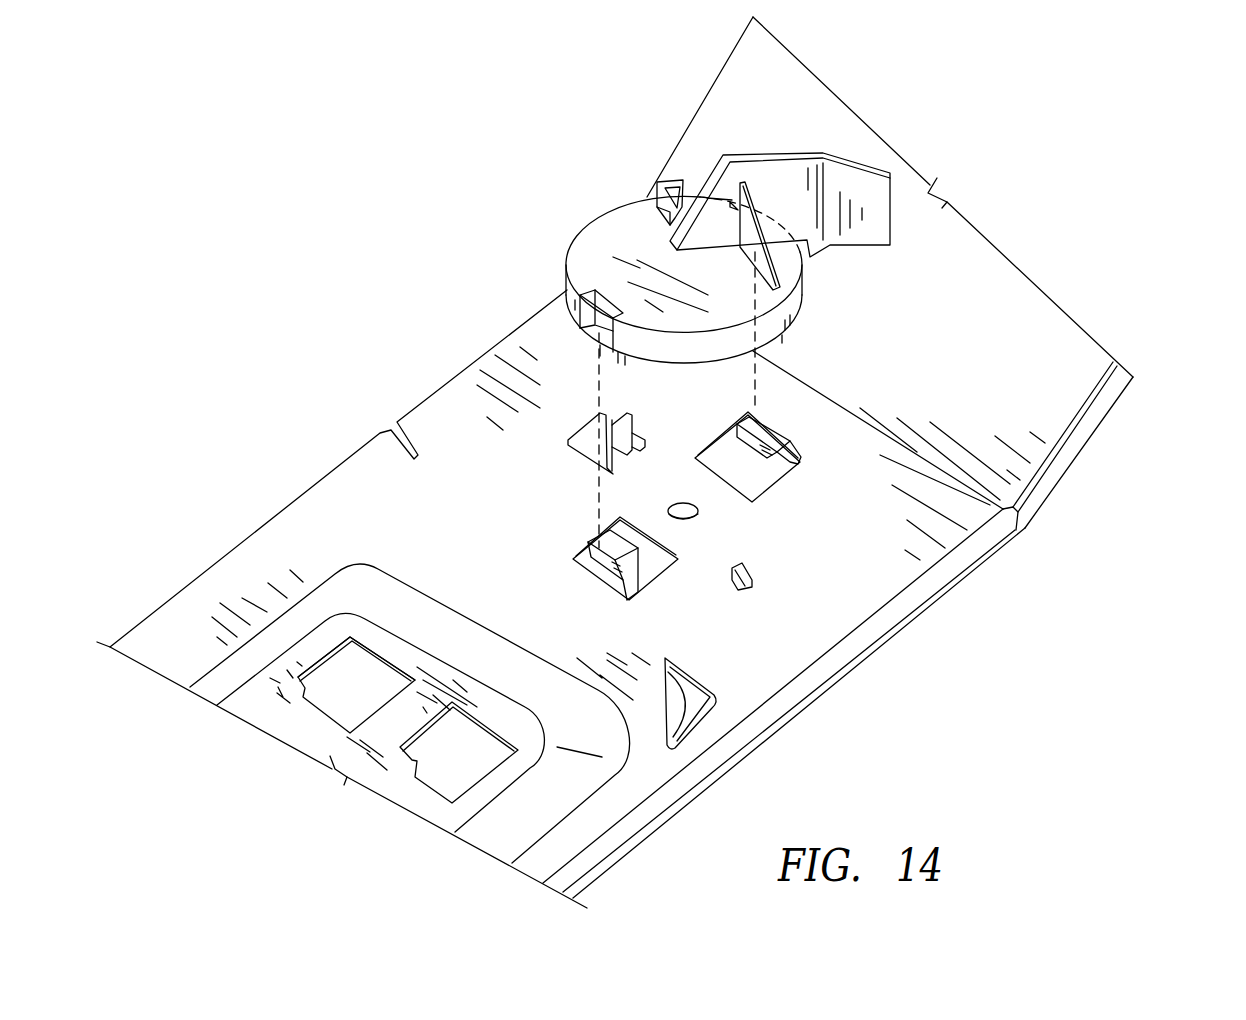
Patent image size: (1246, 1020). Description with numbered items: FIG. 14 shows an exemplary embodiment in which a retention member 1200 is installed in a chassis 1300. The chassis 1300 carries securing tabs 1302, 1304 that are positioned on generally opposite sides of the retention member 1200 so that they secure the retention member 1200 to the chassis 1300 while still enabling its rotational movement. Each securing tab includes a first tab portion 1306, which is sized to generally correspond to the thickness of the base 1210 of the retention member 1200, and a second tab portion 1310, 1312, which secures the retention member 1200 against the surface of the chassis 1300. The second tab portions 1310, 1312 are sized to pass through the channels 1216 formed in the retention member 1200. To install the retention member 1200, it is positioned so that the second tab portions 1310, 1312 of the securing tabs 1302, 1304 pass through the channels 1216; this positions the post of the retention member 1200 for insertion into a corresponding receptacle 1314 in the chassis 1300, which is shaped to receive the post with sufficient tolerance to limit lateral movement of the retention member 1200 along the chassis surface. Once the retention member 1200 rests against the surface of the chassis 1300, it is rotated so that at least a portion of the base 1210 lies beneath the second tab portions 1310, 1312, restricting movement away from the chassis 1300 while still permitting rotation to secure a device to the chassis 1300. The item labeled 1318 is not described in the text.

The retention member 1200 is at (985, 265).
The base 1210 is at (570, 247).
The channels 1216 is at (765, 235).
The chassis 1300 is at (1015, 630).
The securing tab 1302 is at (545, 518).
The securing tab 1304 is at (863, 533).
The first tab portion 1306 is at (603, 577).
The second tab portion 1310 is at (600, 540).
The second tab portion 1312 is at (762, 437).
The receptacle 1314 is at (698, 516).
The clip channel 1318 is at (792, 447).